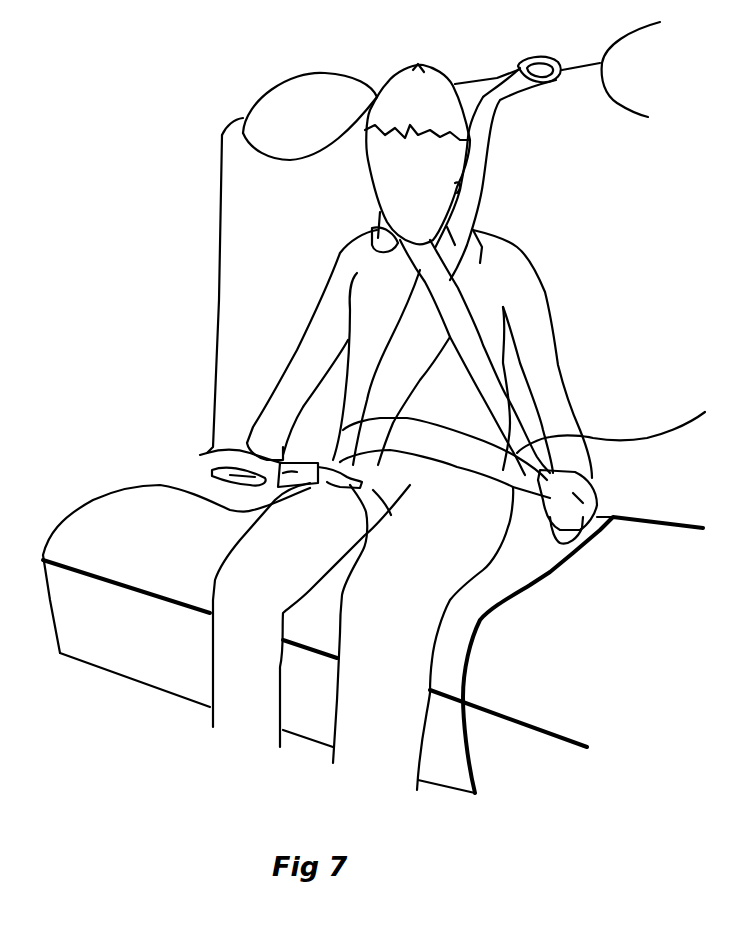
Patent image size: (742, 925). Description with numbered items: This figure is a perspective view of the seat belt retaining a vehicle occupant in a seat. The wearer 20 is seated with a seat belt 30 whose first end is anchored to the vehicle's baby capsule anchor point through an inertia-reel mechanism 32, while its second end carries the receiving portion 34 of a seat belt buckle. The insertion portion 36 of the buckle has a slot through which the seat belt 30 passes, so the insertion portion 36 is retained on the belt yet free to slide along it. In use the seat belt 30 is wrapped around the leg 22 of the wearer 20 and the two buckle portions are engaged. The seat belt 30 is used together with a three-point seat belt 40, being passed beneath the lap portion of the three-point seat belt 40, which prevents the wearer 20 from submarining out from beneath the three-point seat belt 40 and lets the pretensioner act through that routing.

The wearer 20 is at (540, 350).
The leg 22 is at (153, 484).
The seat belt 30 is at (397, 358).
The inertia-reel mechanism 32 is at (567, 67).
The receiving portion of the seat belt buckle 34 is at (207, 455).
The insertion portion of the seat belt buckle 36 is at (280, 487).
The three-point seat belt 40 is at (518, 428).